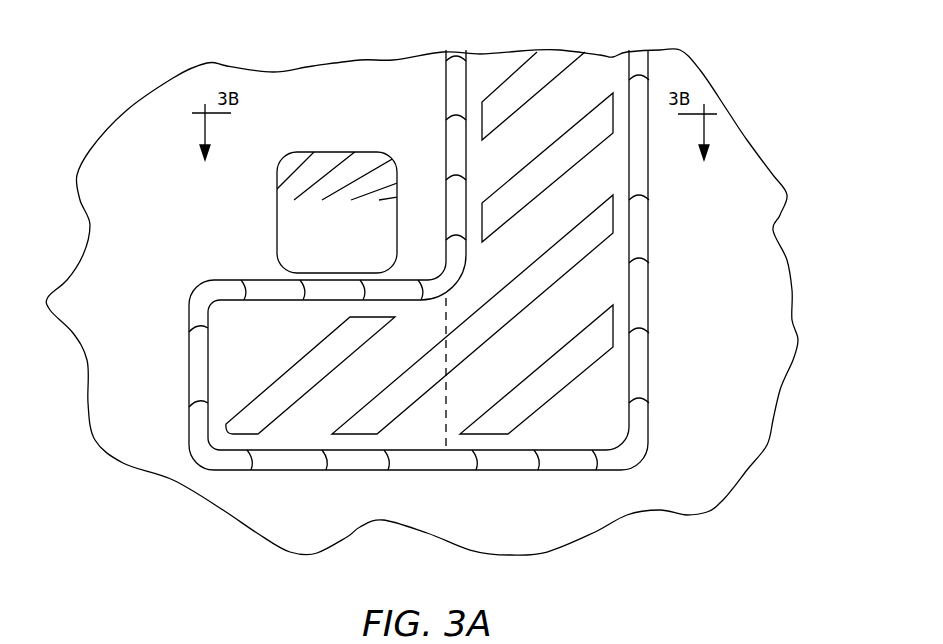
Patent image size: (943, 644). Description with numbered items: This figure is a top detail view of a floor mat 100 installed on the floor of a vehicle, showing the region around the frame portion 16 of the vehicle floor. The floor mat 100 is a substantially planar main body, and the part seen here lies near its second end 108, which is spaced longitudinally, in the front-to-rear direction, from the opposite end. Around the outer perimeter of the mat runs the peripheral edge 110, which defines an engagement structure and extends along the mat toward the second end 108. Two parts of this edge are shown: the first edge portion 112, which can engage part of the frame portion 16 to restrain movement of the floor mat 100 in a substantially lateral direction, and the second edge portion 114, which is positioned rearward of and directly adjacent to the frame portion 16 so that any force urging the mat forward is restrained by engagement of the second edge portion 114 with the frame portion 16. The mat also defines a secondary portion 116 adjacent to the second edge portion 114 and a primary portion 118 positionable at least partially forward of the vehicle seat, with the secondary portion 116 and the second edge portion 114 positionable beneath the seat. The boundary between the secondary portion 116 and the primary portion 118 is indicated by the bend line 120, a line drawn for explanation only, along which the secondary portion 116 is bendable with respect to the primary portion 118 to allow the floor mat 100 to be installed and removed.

The floor mat 100 is at (655, 58).
The frame portion 16 is at (337, 150).
The second end 108 is at (623, 470).
The peripheral edge 110 is at (650, 238).
The first edge portion 112 is at (444, 97).
The second edge portion 114 is at (241, 278).
The secondary portion 116 is at (303, 475).
The primary portion 118 is at (552, 478).
The bend line 120 is at (447, 389).